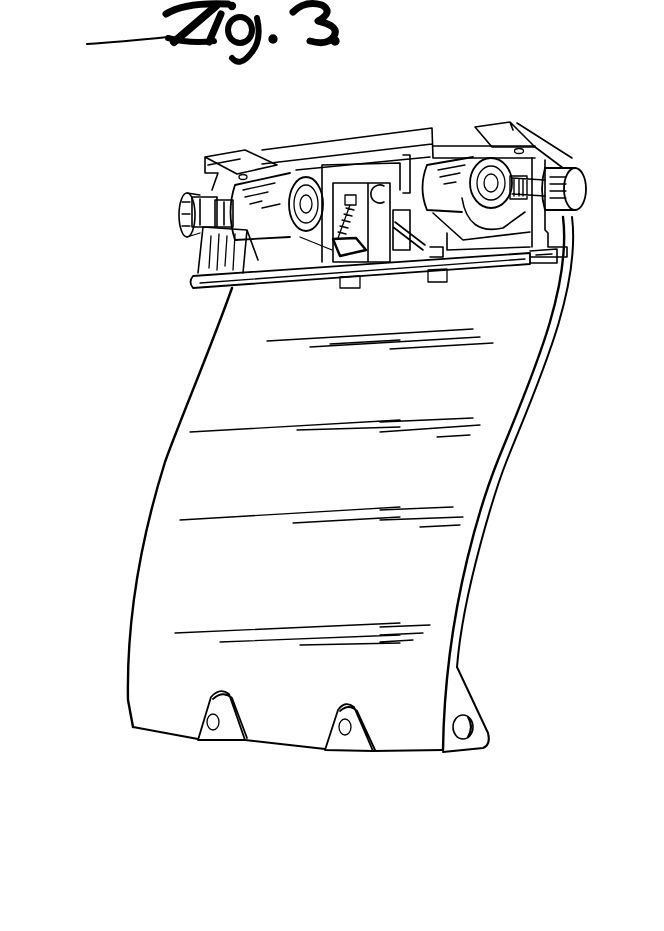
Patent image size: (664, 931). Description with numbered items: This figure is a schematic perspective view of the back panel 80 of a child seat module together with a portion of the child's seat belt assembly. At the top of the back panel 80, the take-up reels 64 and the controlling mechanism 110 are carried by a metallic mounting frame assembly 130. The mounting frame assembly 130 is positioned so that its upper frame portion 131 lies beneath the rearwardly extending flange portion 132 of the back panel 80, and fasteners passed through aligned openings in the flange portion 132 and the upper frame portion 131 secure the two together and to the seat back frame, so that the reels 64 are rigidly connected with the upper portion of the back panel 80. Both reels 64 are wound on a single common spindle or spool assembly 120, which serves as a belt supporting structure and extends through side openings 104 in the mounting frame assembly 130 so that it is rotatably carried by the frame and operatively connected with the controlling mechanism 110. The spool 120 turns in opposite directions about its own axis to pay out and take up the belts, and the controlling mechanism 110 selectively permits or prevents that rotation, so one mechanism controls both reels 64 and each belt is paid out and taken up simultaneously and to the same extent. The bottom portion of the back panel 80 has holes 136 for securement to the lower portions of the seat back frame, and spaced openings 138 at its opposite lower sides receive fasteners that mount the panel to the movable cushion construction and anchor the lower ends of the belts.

The reels 64 is at (277, 183).
The back panel 80 is at (192, 436).
The side openings 104 is at (205, 237).
The controlling mechanism 110 is at (374, 211).
The spindle or spool assembly 120 is at (567, 163).
The mounting frame assembly 130 is at (556, 256).
The upper frame portion 131 is at (520, 140).
The rearwardly extending flange portion 132 is at (236, 150).
The holes 136 is at (215, 730).
The spaced openings 138 is at (472, 738).